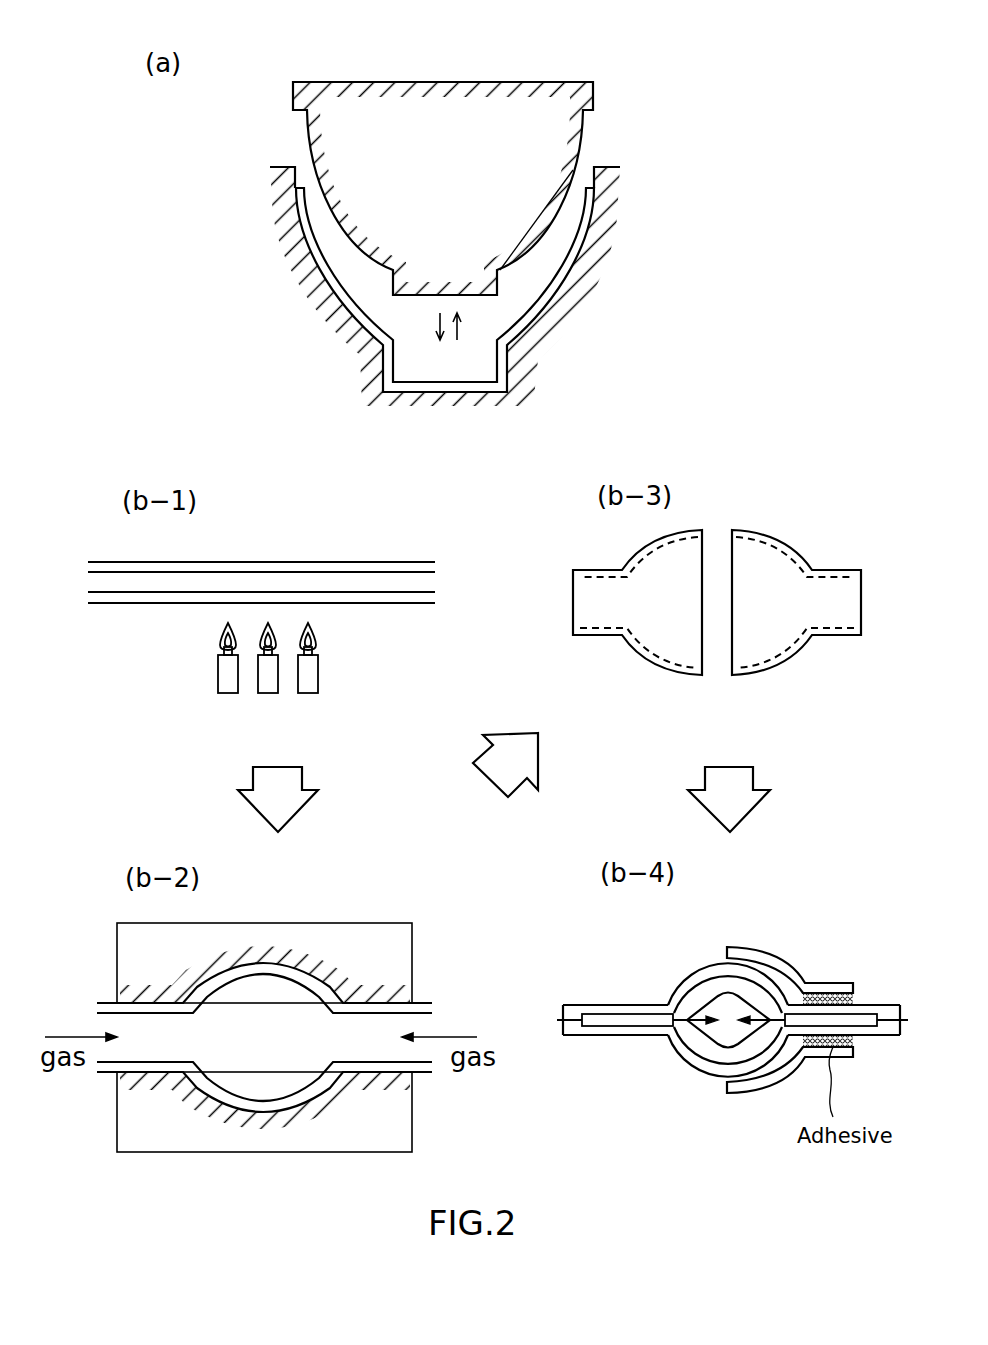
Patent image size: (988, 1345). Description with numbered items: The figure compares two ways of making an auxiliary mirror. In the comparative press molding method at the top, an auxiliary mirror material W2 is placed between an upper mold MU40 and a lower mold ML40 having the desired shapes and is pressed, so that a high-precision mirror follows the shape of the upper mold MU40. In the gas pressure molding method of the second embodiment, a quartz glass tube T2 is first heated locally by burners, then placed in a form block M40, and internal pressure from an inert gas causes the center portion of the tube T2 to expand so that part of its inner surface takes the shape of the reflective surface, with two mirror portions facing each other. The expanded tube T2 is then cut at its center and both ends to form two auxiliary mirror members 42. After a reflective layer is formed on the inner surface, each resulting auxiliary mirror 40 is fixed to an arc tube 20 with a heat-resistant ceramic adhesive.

The upper mold MU40 is at (530, 98).
The lower mold ML40 is at (616, 167).
The auxiliary mirror material W2 is at (296, 188).
The tube T2 is at (408, 560).
The auxiliary mirror member 42 is at (685, 530).
The form block M40 is at (350, 933).
The arc tube 20 is at (693, 977).
The auxiliary mirror 40 is at (772, 950).